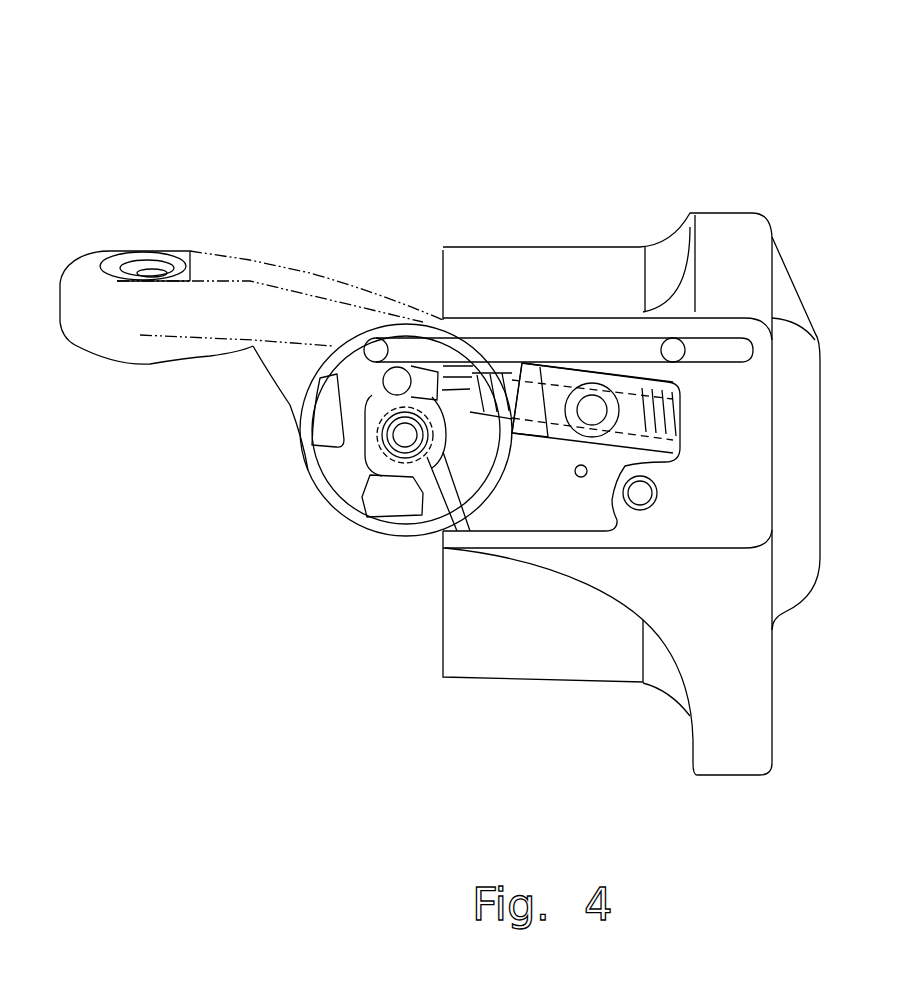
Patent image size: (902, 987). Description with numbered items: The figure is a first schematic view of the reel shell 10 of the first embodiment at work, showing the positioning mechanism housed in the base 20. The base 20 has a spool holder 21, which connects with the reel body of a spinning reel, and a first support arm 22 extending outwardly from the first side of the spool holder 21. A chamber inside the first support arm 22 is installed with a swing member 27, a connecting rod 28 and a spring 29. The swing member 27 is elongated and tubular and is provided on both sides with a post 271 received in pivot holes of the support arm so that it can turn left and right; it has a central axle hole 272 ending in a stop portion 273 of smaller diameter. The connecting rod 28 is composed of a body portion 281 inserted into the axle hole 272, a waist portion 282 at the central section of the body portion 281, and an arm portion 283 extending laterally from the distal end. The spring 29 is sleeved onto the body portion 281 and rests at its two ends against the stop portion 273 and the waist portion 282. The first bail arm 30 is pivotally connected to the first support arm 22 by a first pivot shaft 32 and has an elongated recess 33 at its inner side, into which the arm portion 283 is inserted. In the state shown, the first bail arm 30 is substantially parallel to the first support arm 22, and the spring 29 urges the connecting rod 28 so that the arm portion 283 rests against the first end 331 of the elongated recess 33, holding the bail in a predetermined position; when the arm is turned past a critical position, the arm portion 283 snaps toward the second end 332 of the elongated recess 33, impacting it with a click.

The reel shell 10 is at (83, 105).
The base 20 is at (748, 698).
The spool holder 21 is at (497, 627).
The first support arm 22 is at (608, 568).
The swing member 27 is at (565, 373).
The post 271 is at (593, 408).
The axle hole 272 is at (645, 390).
The stop portion 273 is at (643, 393).
The connecting rod 28 is at (528, 163).
The body portion 281 is at (550, 412).
The waist portion 282 is at (463, 392).
The arm portion 283 is at (393, 382).
The spring 29 is at (443, 467).
The first bail arm 30 is at (112, 302).
The first pivot shaft 32 is at (403, 437).
The elongated recess 33 is at (125, 152).
The first end 331 is at (337, 348).
The second end 332 is at (295, 440).